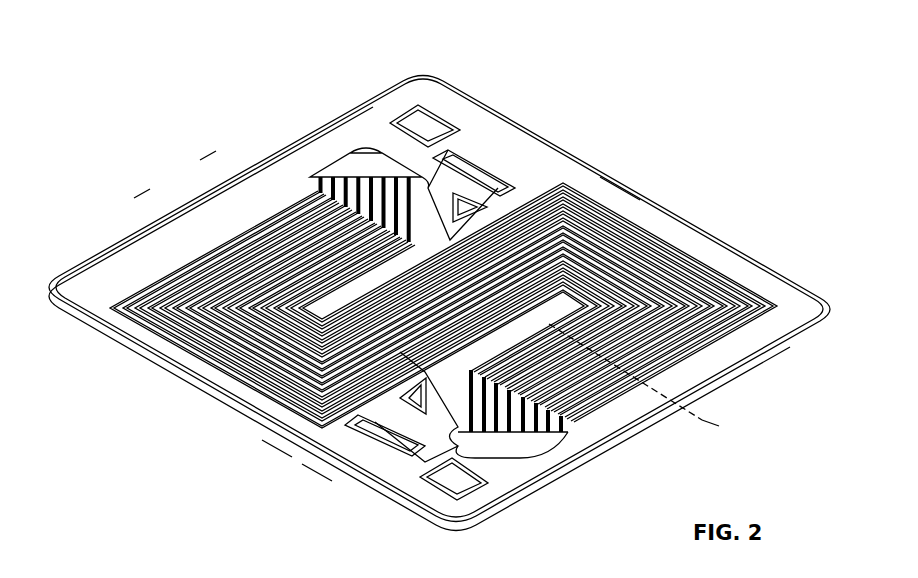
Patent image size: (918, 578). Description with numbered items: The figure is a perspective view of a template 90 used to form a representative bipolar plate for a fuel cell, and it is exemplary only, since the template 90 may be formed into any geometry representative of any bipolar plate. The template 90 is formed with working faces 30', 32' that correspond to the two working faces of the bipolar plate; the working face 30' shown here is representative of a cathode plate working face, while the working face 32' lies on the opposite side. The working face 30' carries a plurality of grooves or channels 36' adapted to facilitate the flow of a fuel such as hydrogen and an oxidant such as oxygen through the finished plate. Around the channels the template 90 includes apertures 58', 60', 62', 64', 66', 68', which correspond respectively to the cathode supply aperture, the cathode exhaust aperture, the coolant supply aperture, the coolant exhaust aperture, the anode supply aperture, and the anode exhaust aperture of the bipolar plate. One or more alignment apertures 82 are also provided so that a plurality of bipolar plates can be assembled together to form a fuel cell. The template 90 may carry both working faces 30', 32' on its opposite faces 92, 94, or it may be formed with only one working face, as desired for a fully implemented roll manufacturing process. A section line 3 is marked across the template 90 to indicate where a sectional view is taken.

The template 90 is at (183, 116).
The working face 30' is at (439, 289).
The working face 32' is at (387, 326).
The grooves or channels 36' is at (443, 267).
The aperture 58' is at (404, 140).
The alignment aperture 82 is at (428, 134).
The aperture 62' is at (497, 136).
The aperture 66' is at (506, 187).
The face 92 is at (801, 298).
The face 94 is at (812, 359).
The aperture 60' is at (497, 437).
The aperture 64' is at (361, 465).
The aperture 68' is at (379, 417).
The section line 3 is at (549, 324).